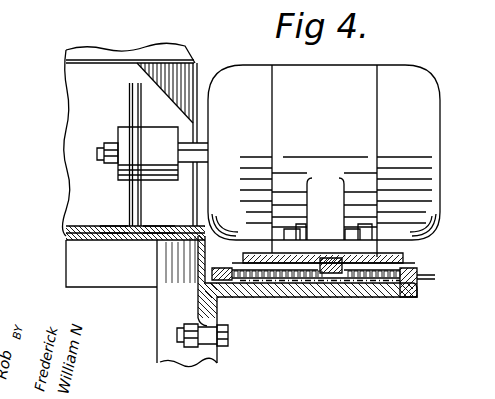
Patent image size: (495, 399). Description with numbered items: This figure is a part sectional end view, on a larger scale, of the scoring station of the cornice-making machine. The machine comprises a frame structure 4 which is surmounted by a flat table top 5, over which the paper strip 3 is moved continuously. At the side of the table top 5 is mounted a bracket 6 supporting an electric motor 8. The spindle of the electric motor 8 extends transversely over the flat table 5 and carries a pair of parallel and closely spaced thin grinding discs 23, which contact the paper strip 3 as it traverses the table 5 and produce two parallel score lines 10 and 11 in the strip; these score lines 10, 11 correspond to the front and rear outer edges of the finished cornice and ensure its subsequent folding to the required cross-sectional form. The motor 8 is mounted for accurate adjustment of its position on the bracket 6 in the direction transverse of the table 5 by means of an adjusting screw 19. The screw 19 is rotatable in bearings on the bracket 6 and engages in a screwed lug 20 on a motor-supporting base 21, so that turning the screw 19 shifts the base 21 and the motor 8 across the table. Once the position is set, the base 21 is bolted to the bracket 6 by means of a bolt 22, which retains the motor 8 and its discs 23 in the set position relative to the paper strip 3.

The paper strip 3 is at (66, 232).
The frame structure 4 is at (157, 320).
The flat table top 5 is at (148, 238).
The bracket 6 is at (371, 298).
The electric motor 8 is at (324, 161).
The score line 10 is at (128, 226).
The score line 11 is at (145, 228).
The adjusting screw 19 is at (379, 297).
The screwed lug 20 is at (330, 290).
The motor-supporting base 21 is at (403, 260).
The bolt 22 is at (346, 232).
The grinding disc 23 is at (138, 104).